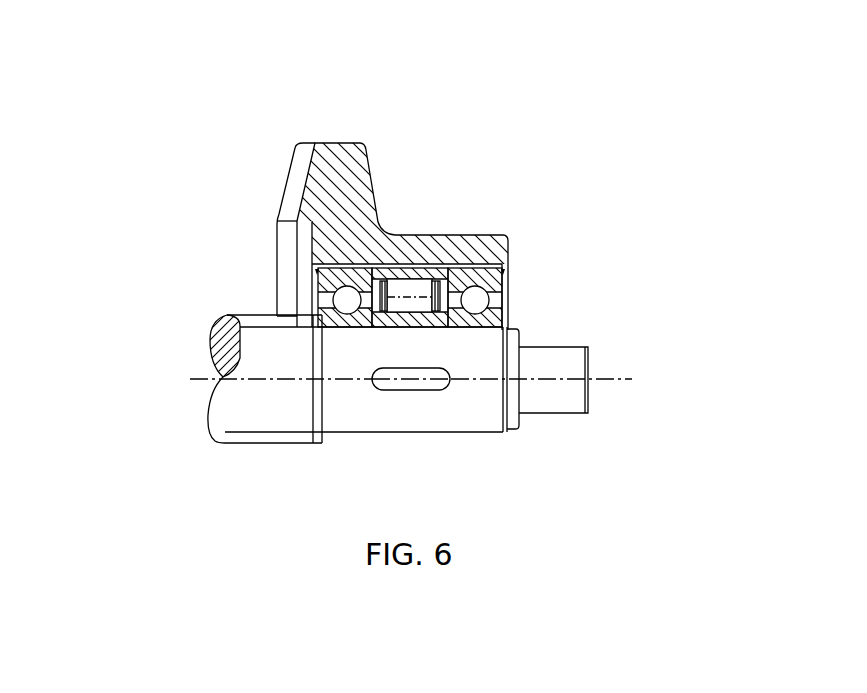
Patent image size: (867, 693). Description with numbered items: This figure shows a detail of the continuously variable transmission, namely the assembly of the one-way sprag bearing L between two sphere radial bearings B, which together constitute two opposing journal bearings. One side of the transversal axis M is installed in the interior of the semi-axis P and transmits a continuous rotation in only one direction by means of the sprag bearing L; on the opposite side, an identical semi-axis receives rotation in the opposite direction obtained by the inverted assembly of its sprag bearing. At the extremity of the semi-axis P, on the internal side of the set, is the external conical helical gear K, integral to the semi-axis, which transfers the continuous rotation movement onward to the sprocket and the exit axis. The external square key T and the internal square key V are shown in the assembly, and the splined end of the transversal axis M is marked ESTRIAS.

The conical gear K is at (286, 184).
The semi-axis P is at (397, 233).
The sprag bearing L is at (672, 183).
The external square key T is at (303, 265).
The bearings B is at (495, 298).
The splines ESTRIAS is at (238, 437).
The transversal axis M is at (383, 432).
The internal square key V is at (423, 388).